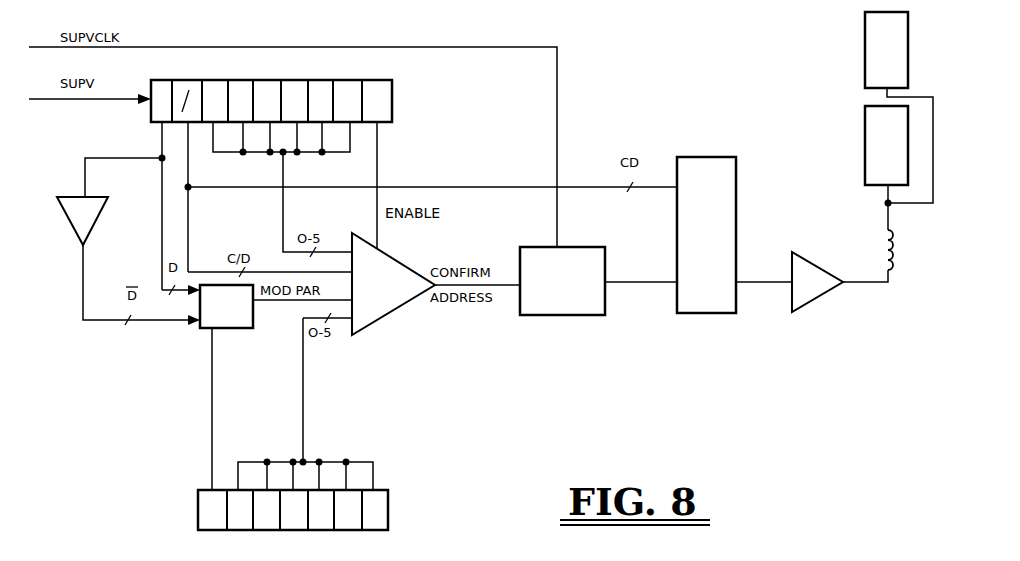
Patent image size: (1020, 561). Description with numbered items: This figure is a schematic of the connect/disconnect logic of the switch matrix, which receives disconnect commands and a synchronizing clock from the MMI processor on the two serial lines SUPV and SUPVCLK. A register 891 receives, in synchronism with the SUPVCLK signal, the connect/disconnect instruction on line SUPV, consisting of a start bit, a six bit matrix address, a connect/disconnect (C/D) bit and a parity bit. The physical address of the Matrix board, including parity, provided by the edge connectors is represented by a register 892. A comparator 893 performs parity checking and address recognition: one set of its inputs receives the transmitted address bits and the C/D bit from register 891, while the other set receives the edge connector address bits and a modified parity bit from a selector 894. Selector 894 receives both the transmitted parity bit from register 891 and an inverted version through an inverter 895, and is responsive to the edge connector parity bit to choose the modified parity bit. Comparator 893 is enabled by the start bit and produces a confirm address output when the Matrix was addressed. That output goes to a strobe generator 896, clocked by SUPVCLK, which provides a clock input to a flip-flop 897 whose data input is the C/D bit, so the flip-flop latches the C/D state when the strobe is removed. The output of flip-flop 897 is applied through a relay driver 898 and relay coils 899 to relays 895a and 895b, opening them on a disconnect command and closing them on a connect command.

The register 891 is at (387, 80).
The register 892 is at (388, 512).
The comparator 893 is at (380, 330).
The selector 894 is at (202, 330).
The inverter 895 is at (107, 205).
The relay 895a is at (863, 13).
The relay 895b is at (865, 145).
The strobe generator 896 is at (607, 312).
The flip-flop 897 is at (738, 168).
The relay driver 898 is at (823, 268).
The relay coils 899 is at (893, 243).